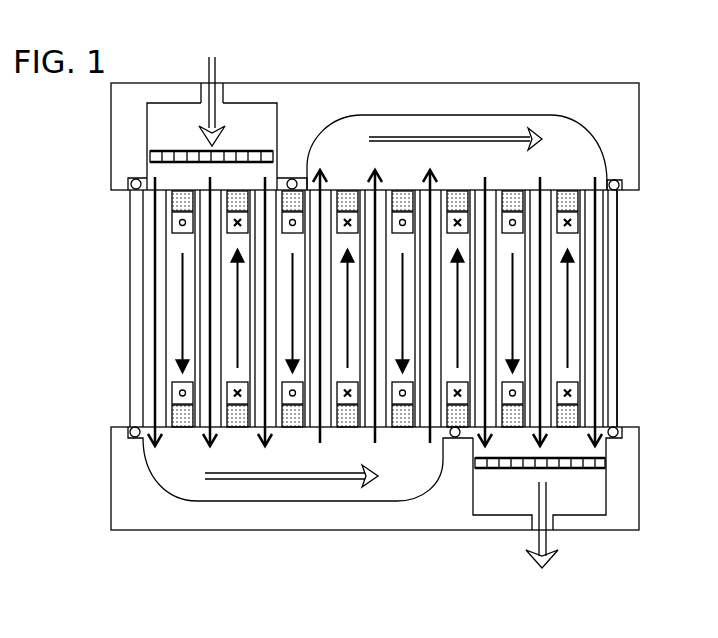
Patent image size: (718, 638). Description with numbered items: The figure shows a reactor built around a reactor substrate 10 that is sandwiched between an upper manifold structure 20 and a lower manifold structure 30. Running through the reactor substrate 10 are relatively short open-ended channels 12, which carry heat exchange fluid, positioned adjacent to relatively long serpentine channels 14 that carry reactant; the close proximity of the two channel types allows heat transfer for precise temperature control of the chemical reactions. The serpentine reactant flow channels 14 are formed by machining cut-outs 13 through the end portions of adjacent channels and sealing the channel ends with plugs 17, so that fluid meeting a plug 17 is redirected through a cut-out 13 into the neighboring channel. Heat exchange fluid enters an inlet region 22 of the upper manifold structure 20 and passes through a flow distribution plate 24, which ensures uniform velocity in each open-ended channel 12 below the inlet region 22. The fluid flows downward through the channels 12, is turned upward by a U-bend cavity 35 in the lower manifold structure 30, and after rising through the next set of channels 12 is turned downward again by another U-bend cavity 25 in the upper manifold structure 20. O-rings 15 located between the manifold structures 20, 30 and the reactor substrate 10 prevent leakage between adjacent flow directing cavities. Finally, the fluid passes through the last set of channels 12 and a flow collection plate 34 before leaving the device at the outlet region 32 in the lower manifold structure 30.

The reactor substrate 10 is at (617, 292).
The relatively short open-ended channel 12 is at (595, 253).
The cut-out 13 is at (173, 227).
The relatively long serpentine channel 14 is at (566, 352).
The O-ring 15 is at (136, 180).
The plug 17 is at (173, 197).
The upper manifold structure 20 is at (639, 137).
The inlet region 22 is at (192, 138).
The flow distribution plate 24 is at (268, 151).
The U-bend cavity 25 is at (469, 164).
The lower manifold structure 30 is at (639, 480).
The outlet region 32 is at (593, 503).
The flow collection plate 34 is at (474, 476).
The U-bend cavity 35 is at (307, 468).